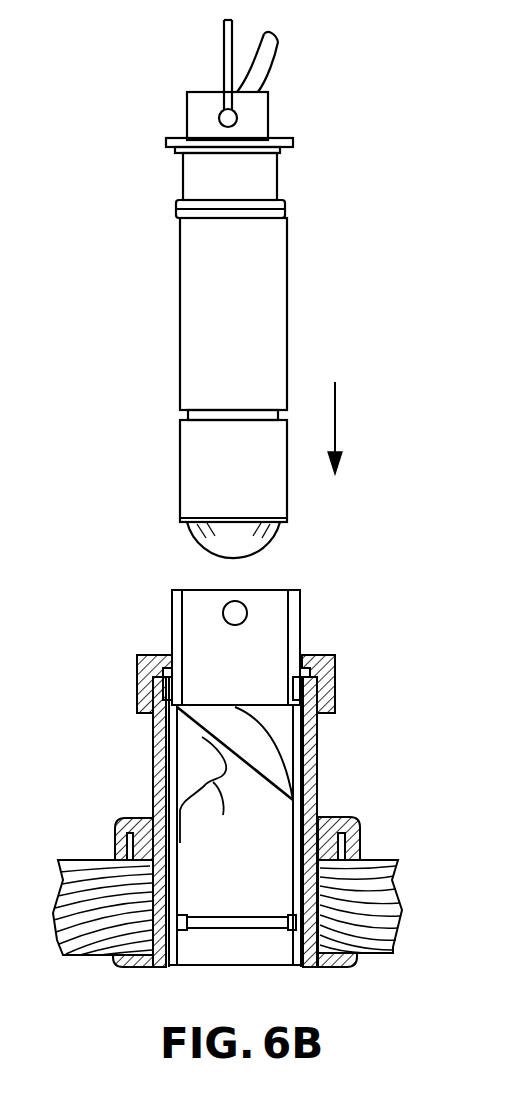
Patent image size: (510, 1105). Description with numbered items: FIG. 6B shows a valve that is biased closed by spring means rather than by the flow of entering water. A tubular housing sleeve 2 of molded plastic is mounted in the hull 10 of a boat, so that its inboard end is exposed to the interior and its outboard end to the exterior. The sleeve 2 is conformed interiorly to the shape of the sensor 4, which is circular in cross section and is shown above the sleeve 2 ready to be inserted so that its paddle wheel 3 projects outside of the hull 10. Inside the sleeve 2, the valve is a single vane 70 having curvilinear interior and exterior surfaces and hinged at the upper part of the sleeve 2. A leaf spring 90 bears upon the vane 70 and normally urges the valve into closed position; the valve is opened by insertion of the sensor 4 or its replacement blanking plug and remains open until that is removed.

The sensor 4 is at (158, 355).
The paddle wheel 3 is at (207, 550).
The housing sleeve 2 is at (297, 803).
The single vane 70 is at (268, 750).
The leaf spring 90 is at (208, 790).
The hull 10 is at (80, 858).